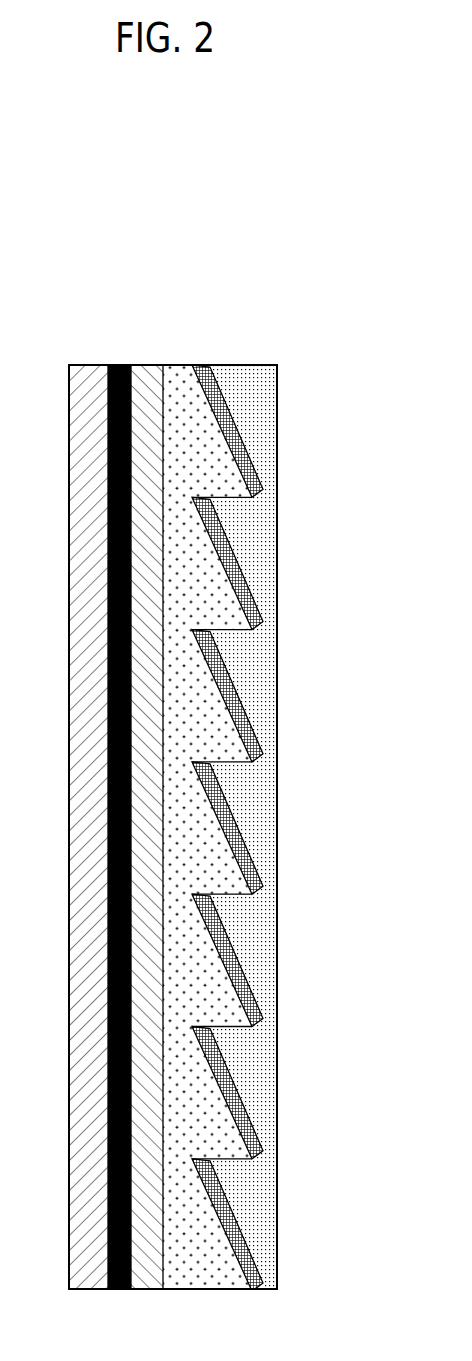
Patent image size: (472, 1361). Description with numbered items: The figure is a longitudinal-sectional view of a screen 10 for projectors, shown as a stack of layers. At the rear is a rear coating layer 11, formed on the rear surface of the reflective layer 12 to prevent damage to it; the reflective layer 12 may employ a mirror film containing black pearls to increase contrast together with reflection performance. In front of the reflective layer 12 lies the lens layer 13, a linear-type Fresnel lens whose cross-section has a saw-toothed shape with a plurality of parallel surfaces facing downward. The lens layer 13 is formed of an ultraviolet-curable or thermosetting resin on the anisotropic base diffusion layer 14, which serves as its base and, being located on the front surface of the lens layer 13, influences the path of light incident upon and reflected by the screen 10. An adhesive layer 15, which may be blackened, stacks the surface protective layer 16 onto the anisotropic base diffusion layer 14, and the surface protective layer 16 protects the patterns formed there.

The screen 10 is at (316, 267).
The rear coating layer 11 is at (257, 377).
The reflective layer 12 is at (200, 373).
The lens layer 13 is at (175, 377).
The anisotropic base diffusion layer 14 is at (145, 377).
The adhesive layer 15 is at (118, 375).
The surface protective layer 16 is at (87, 377).